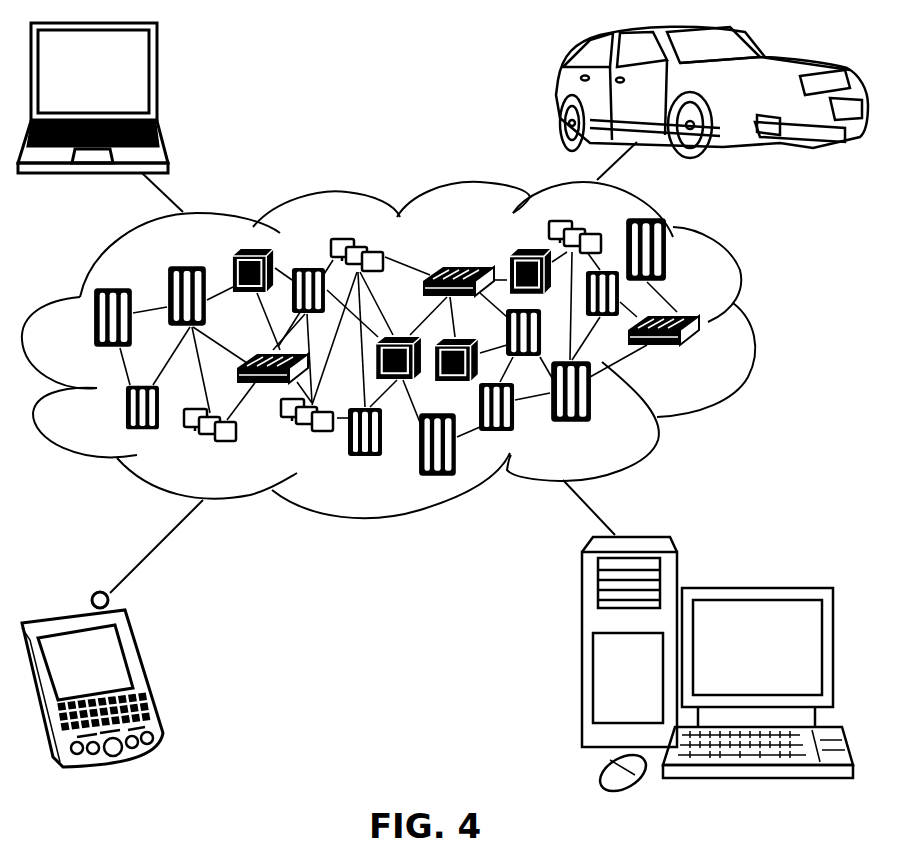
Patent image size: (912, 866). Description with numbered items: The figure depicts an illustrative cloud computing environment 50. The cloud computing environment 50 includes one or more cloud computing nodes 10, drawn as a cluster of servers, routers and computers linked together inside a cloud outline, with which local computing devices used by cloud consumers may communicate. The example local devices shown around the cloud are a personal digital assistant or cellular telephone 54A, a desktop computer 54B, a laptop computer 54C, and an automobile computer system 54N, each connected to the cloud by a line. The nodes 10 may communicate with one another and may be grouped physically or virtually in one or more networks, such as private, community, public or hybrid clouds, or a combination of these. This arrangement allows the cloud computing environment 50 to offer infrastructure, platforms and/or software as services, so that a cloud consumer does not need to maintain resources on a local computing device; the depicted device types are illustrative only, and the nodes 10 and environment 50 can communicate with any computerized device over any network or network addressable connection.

The cloud computing nodes 10 is at (712, 358).
The cloud computing environment 50 is at (757, 327).
The personal digital assistant or cellular telephone 54A is at (148, 673).
The desktop computer 54B is at (753, 588).
The laptop computer 54C is at (157, 78).
The automobile computer system 54N is at (558, 97).